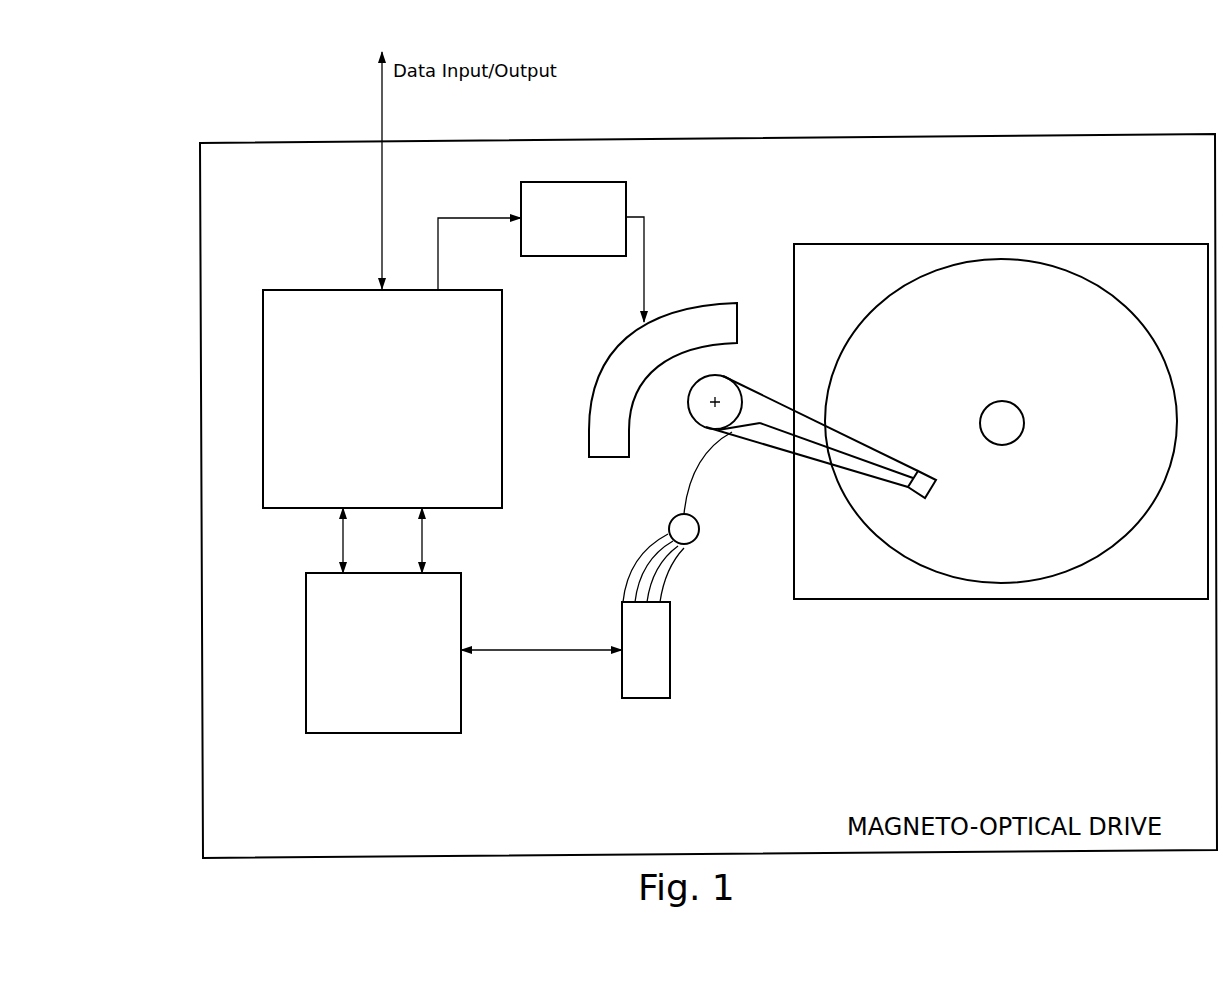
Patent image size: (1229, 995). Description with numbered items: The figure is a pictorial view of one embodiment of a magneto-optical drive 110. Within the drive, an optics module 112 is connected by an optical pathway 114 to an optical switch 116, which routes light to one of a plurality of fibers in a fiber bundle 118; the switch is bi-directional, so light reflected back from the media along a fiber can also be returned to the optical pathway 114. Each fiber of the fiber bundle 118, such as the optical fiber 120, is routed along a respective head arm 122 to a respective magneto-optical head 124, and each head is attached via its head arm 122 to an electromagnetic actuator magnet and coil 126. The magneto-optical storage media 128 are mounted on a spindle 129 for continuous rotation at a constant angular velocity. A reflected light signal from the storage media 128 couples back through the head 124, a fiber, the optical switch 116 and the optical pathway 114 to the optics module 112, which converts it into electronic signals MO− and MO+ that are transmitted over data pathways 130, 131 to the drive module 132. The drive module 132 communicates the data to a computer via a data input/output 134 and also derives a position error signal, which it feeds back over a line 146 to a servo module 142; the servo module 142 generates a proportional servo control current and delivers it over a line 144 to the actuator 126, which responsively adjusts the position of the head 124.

The magneto-optical drive 110 is at (1103, 108).
The optics module 112 is at (400, 735).
The optical pathway 114 is at (527, 652).
The optical switch 116 is at (670, 635).
The fiber bundle 118 is at (667, 578).
The optical fiber 120 is at (697, 465).
The head arm 122 is at (772, 412).
The magneto-optical head 124 is at (937, 483).
The actuator magnet and coil 126 is at (672, 312).
The magneto-optical storage media 128 is at (1112, 325).
The spindle 129 is at (1023, 425).
The data pathway 130 is at (425, 556).
The data pathway 131 is at (342, 543).
The drive module 132 is at (502, 337).
The data input/output 134 is at (383, 164).
The servo module 142 is at (626, 183).
The line 144 is at (646, 250).
The line 146 is at (445, 218).